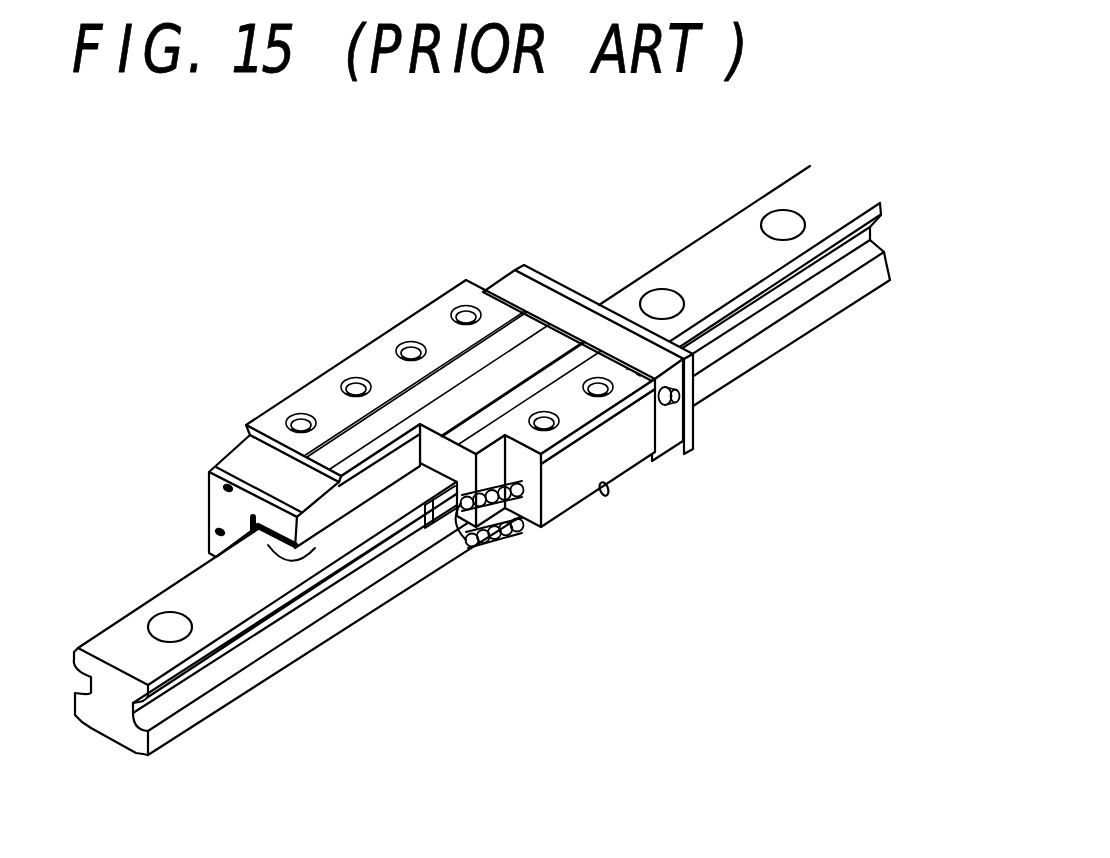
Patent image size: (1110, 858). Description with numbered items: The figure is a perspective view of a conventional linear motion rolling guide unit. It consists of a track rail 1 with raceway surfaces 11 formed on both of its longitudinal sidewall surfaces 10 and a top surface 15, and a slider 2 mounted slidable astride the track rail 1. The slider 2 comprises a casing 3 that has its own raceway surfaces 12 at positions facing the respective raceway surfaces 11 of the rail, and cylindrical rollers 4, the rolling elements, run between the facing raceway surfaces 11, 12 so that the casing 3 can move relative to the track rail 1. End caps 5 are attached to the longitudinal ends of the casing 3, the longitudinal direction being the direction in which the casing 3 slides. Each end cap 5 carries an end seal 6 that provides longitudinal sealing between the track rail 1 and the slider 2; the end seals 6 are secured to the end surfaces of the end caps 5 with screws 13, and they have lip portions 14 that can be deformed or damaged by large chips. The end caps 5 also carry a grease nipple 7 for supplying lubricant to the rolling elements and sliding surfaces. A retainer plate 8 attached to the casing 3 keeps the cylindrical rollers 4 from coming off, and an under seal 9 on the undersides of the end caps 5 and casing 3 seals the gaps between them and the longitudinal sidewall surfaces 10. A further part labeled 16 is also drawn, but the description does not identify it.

The track rail 1 is at (708, 262).
The slider 2 is at (340, 352).
The casing 3 is at (612, 432).
The cylindrical rollers 4 is at (500, 545).
The end caps 5 is at (513, 293).
The end seal 6 is at (538, 275).
The grease nipple 7 is at (692, 406).
The retainer plate 8 is at (455, 590).
The under seal 9 is at (432, 568).
The longitudinal sidewall surfaces 10 is at (172, 700).
The raceway surfaces 11 is at (242, 637).
The raceway surfaces 12 is at (460, 548).
The screws 13 is at (224, 485).
The lip portions 14 is at (276, 550).
The top surface 15 is at (132, 642).
The ball circulation path 16 is at (540, 515).